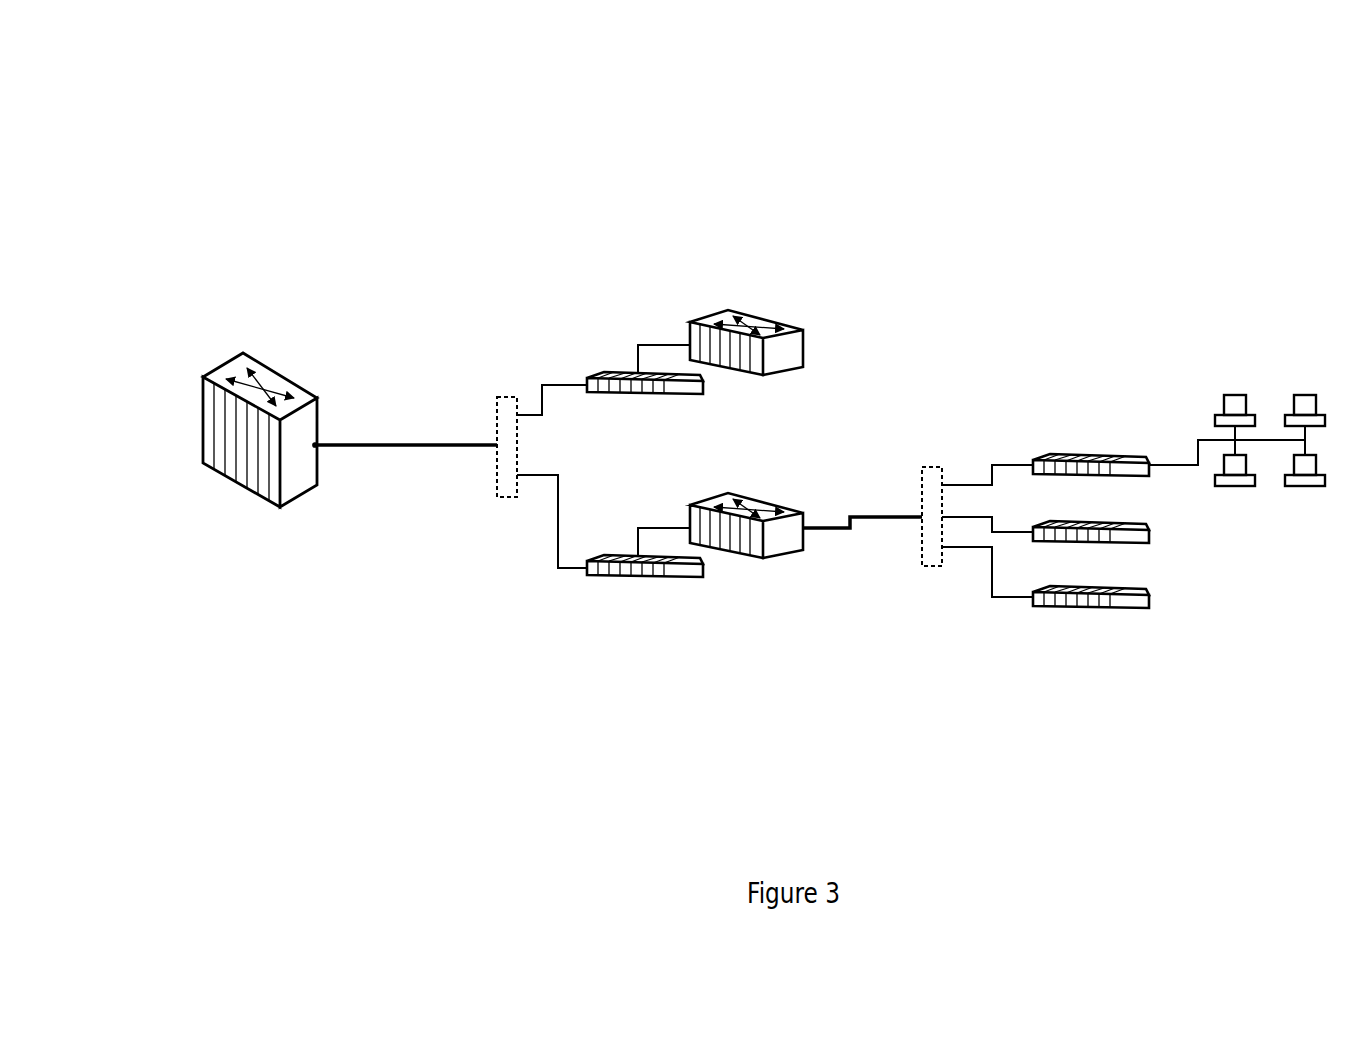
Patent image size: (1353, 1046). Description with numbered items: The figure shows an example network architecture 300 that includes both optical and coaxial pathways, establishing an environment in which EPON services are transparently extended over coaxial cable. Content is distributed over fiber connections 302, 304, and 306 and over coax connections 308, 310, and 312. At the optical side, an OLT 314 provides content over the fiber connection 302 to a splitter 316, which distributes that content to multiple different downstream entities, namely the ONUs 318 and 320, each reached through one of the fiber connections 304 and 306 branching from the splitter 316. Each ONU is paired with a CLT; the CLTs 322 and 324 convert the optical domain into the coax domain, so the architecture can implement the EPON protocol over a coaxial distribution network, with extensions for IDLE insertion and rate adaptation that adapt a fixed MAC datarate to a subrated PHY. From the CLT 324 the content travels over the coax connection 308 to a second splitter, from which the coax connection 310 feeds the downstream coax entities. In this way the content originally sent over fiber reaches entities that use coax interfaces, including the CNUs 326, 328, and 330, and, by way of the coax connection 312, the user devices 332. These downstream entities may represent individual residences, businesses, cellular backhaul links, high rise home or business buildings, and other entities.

The network architecture 300 is at (144, 102).
The fiber connection 302 is at (395, 448).
The fiber connection 304 is at (562, 385).
The fiber connection 306 is at (654, 345).
The coax connection 308 is at (829, 527).
The coax connection 310 is at (1011, 465).
The coax connection 312 is at (1171, 465).
The OLT 314 is at (219, 477).
The splitter 316 is at (503, 399).
The ONU 318 is at (611, 377).
The ONU 320 is at (611, 561).
The CLT 322 is at (714, 321).
The CLT 324 is at (715, 505).
The CNU 326 is at (1059, 460).
The CNU 328 is at (1134, 536).
The CNU 330 is at (1050, 602).
The user devices 332 is at (1207, 393).